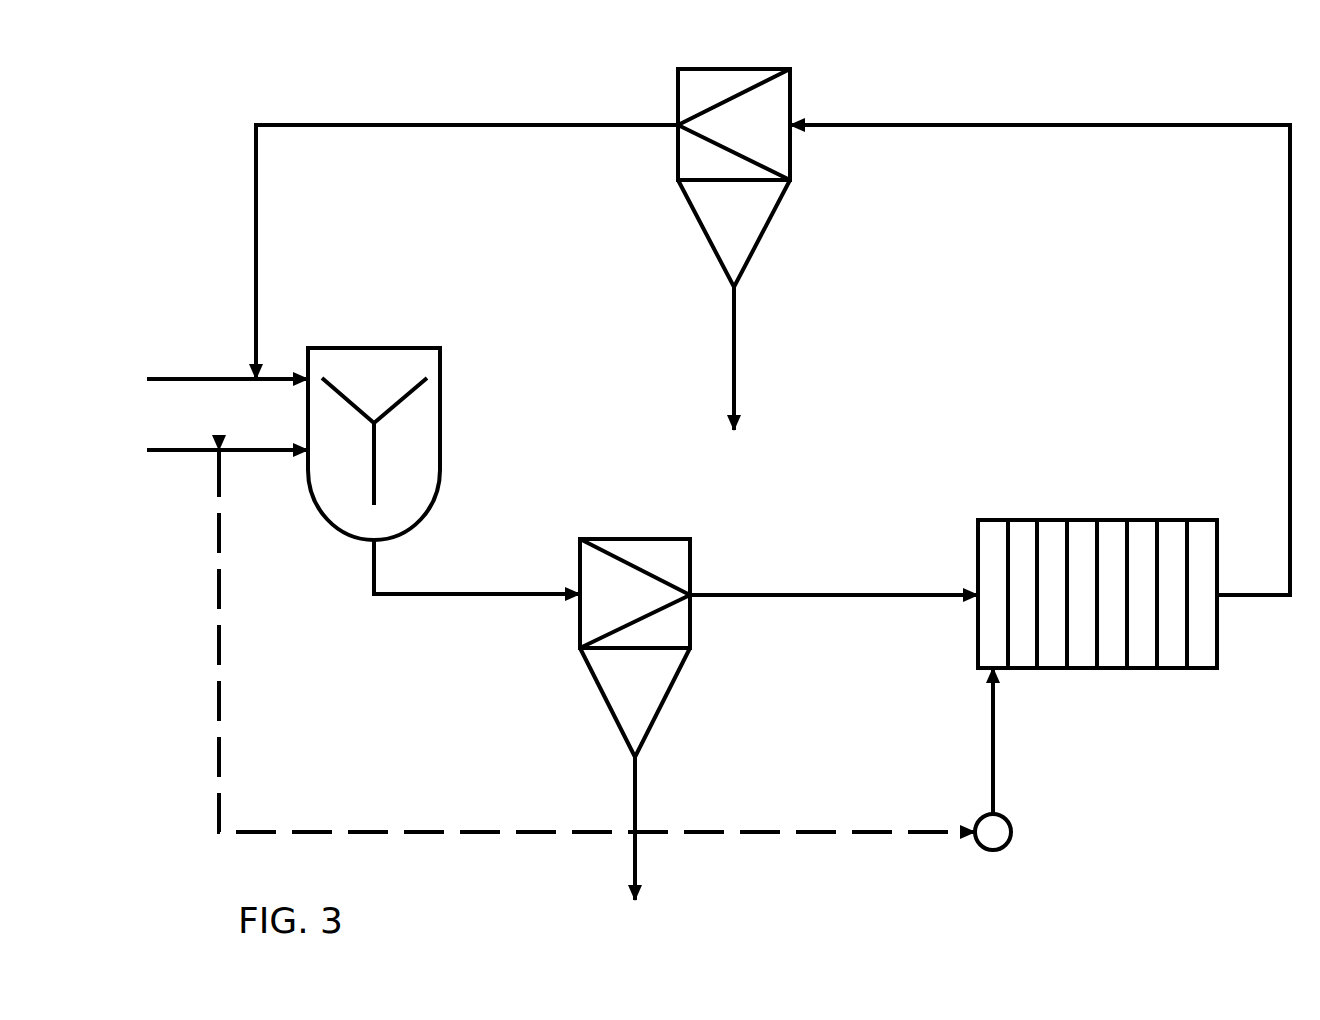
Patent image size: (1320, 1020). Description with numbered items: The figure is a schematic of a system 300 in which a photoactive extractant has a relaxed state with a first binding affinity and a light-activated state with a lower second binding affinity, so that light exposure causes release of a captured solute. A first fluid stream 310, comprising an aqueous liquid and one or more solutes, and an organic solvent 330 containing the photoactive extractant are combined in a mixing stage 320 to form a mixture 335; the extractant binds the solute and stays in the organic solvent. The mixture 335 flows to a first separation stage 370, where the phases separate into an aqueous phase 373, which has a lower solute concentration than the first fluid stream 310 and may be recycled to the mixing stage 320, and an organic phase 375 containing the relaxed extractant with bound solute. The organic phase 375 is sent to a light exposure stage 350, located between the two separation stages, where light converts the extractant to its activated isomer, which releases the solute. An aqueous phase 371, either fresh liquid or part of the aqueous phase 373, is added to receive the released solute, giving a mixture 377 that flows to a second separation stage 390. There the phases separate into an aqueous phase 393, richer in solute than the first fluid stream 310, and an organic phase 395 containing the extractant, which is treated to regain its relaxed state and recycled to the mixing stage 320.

The system 300 is at (1270, 62).
The first fluid stream 310 is at (248, 452).
The mixing stage 320 is at (380, 345).
The organic solvent 330 is at (207, 378).
The mixture 335 is at (500, 600).
The light exposure stage 350 is at (1057, 513).
The first separation stage 370 is at (638, 534).
The aqueous phase 371 is at (1000, 795).
The aqueous phase 373 is at (640, 810).
The organic phase 375 is at (858, 590).
The mixture 377 is at (1285, 258).
The second separation stage 390 is at (727, 62).
The aqueous phase 393 is at (728, 316).
The organic phase 395 is at (495, 118).